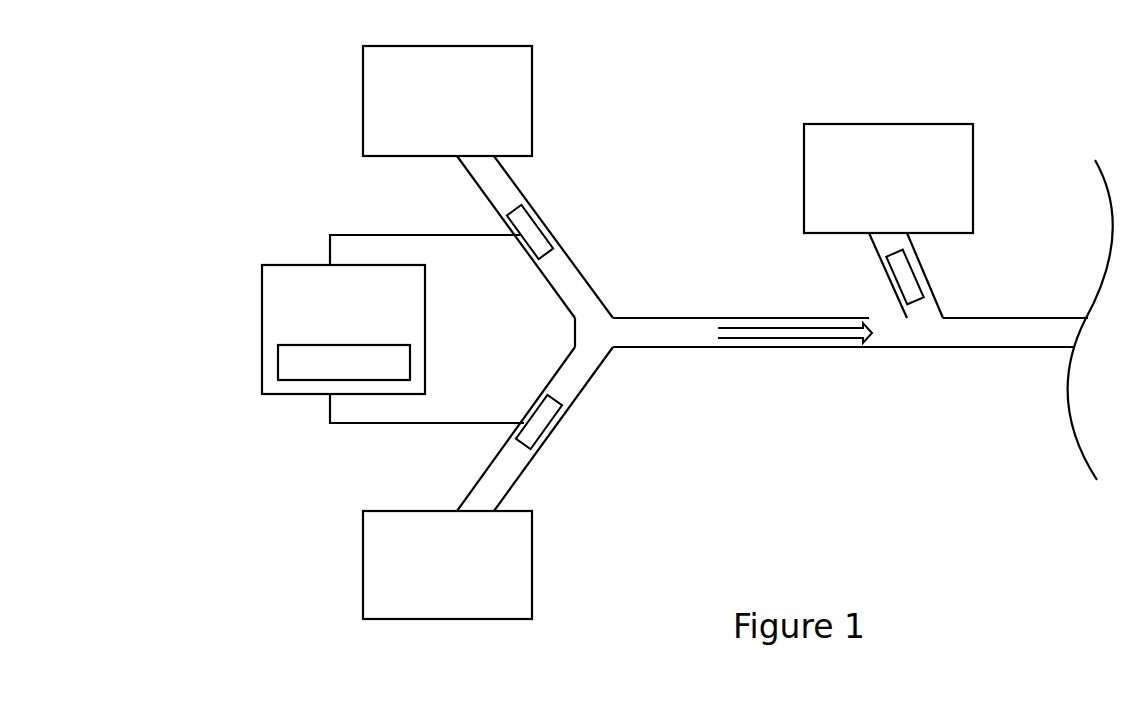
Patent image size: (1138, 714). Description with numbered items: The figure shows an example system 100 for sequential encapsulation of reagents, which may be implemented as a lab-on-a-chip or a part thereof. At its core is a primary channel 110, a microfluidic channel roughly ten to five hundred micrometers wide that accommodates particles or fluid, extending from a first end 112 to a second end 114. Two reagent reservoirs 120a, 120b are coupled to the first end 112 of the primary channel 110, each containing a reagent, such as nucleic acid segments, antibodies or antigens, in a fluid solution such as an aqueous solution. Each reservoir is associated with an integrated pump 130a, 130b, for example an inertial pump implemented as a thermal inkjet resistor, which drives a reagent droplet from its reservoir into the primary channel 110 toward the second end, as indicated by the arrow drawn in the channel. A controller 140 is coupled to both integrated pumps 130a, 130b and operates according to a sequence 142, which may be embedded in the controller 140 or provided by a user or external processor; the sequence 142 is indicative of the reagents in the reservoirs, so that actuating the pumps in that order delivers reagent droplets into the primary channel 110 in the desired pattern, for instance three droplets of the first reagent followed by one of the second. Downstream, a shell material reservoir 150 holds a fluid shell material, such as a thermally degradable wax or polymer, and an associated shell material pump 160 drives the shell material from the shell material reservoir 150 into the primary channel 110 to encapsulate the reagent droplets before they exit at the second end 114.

The example system 100 is at (712, 123).
The primary channel 110 is at (812, 347).
The first end 112 is at (690, 371).
The second end 114 is at (1051, 372).
The reagent reservoir 120a is at (470, 76).
The reagent reservoir 120b is at (470, 538).
The integrated pump 130a is at (517, 222).
The integrated pump 130b is at (522, 438).
The controller 140 is at (402, 292).
The sequence 142 is at (278, 363).
The shell material reservoir 150 is at (920, 150).
The shell material pump 160 is at (912, 268).